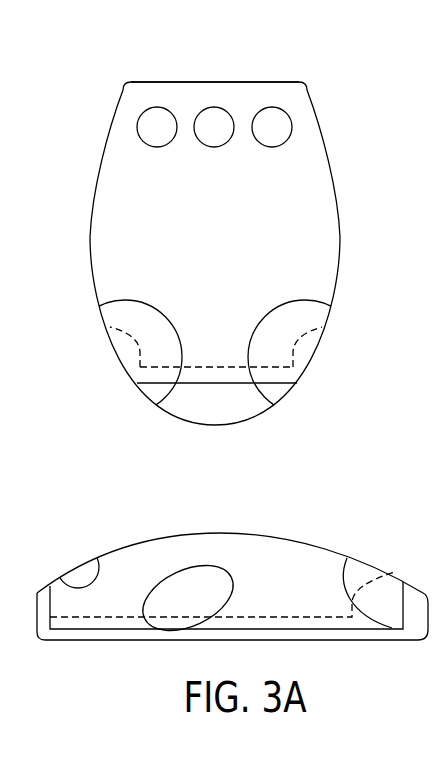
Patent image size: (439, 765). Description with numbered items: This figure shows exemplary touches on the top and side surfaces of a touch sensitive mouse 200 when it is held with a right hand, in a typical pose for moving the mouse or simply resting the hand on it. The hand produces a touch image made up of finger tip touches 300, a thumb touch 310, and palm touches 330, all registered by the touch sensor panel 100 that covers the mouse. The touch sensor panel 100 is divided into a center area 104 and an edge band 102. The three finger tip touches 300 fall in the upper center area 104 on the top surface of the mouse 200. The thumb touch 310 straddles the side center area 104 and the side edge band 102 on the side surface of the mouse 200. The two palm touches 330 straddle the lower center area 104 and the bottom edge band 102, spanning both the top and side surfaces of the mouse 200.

The touch sensitive mouse 200 is at (370, 88).
The center area 104 is at (220, 88).
The finger tip touches 300 is at (155, 148).
The palm touches 330 is at (148, 302).
The thumb touch 310 is at (193, 570).
The edge band 102 is at (303, 360).
The touch sensor panel 100 is at (230, 384).